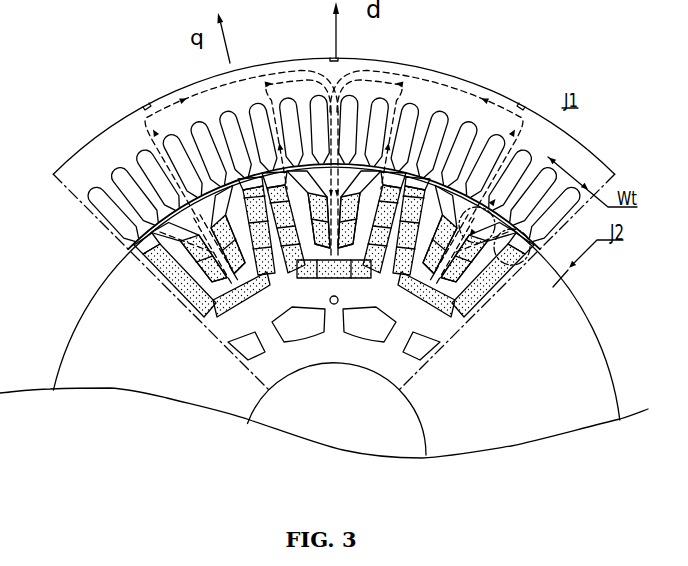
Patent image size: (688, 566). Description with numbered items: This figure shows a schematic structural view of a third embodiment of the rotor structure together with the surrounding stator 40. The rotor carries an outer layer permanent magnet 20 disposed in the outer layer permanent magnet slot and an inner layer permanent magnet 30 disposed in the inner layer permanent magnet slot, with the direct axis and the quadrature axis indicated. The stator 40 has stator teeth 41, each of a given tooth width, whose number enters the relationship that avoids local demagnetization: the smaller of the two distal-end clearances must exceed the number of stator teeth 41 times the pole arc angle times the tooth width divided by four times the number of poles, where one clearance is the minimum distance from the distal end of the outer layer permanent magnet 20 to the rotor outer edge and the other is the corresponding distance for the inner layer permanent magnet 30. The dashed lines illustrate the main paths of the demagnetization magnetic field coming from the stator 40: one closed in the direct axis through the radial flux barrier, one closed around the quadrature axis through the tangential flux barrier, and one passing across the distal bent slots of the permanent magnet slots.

The outer layer permanent magnet 20 is at (563, 108).
The inner layer permanent magnet 30 is at (483, 295).
The stator 40 is at (102, 150).
The stator teeth 41 is at (148, 158).